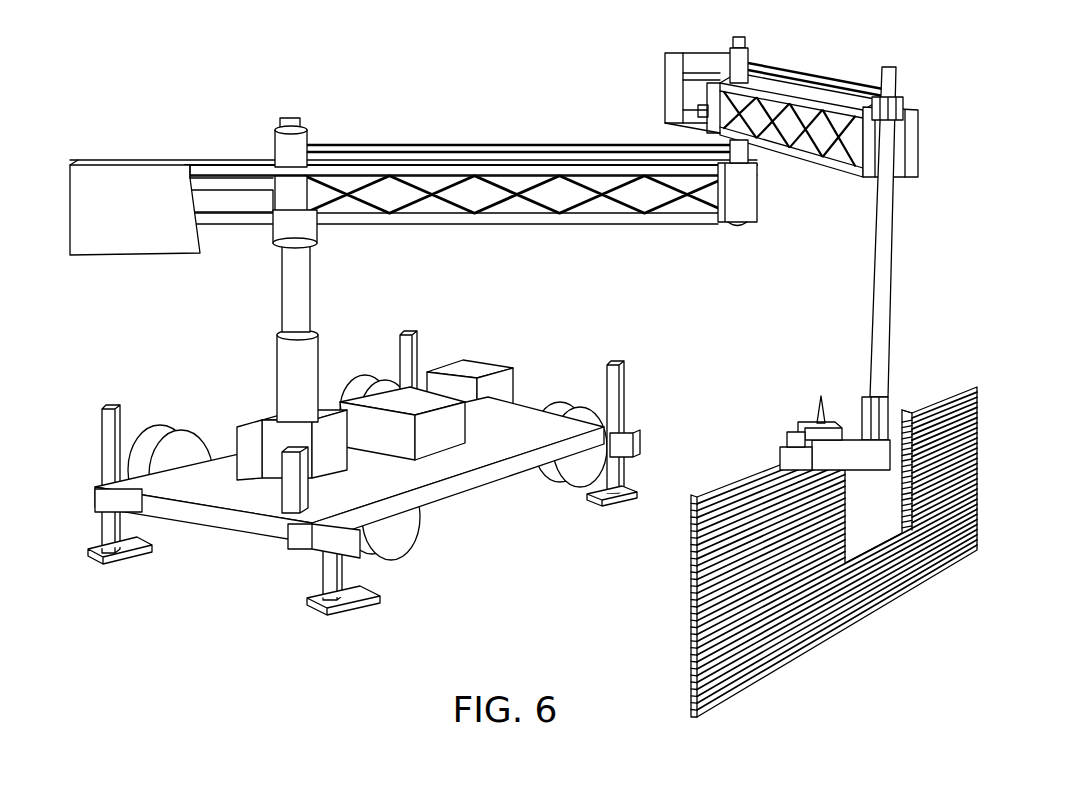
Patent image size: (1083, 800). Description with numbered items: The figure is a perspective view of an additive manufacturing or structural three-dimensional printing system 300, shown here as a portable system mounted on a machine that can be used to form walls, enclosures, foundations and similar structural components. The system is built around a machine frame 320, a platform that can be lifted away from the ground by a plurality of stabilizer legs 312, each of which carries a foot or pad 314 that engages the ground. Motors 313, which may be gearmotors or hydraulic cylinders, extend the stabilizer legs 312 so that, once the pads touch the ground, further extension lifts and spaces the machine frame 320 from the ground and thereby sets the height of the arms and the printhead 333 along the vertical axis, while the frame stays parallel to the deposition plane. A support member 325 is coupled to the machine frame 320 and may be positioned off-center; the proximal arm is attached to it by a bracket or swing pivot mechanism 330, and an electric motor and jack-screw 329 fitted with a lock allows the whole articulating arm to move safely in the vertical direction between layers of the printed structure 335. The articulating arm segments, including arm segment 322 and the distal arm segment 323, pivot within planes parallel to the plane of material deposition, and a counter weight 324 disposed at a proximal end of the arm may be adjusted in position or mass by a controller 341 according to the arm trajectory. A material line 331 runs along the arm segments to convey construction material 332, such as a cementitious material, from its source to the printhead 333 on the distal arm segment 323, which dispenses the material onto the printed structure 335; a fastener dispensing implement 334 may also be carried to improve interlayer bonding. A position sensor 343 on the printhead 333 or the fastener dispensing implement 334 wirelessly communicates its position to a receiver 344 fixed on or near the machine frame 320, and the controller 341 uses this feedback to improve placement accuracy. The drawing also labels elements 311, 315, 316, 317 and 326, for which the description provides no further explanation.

The printing system 300 is at (331, 55).
The wheel 311 is at (170, 432).
The stabilizer legs 312 is at (104, 405).
The motors 313 is at (135, 524).
The foot or pad 314 is at (140, 563).
The control unit 315 is at (481, 362).
The support arm 316 is at (230, 207).
The mount bracket 317 is at (683, 103).
The machine frame 320 is at (200, 498).
The arm segment 322 is at (822, 164).
The distal arm segment 323 is at (880, 471).
The counter weight 324 is at (126, 257).
The support member 325 is at (307, 275).
The vertical post 326 is at (897, 238).
The electric motor and jack-screw 329 is at (278, 351).
The pivot mechanism 330 is at (320, 227).
The material line 331 is at (499, 143).
The construction material 332 is at (440, 440).
The printhead 333 is at (782, 456).
The fastener dispensing implement 334 is at (790, 432).
The printed structure 335 is at (658, 598).
The controller 341 is at (245, 420).
The position sensor 343 is at (822, 396).
The receiver 344 is at (283, 492).